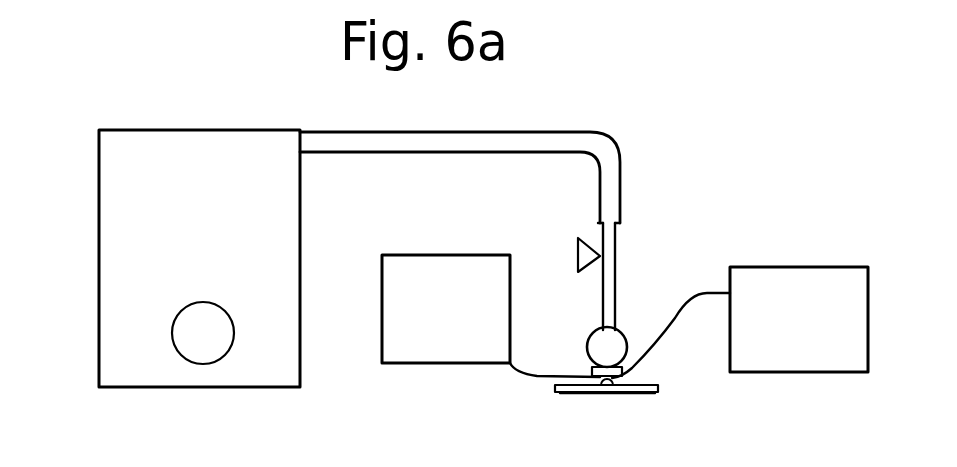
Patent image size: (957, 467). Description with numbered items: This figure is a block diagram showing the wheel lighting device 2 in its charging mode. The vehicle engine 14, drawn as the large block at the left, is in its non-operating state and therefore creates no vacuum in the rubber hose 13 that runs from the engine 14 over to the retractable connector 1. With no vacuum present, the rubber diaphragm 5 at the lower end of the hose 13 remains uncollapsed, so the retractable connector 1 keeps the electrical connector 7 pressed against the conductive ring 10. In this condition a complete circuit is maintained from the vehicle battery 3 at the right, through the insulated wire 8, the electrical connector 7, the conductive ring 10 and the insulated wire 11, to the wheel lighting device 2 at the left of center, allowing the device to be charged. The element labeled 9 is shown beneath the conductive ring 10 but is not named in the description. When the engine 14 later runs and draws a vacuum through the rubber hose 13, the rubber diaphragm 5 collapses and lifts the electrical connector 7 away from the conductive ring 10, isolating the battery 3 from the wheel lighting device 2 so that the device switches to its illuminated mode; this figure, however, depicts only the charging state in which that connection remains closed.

The retractable connector 1 is at (628, 263).
The wheel lighting device 2 is at (422, 338).
The vehicle battery 3 is at (783, 350).
The rubber diaphragm 5 is at (598, 345).
The electrical connector 7 is at (630, 371).
The insulated wire 8 is at (677, 318).
The substrate 9 is at (566, 392).
The conductive ring 10 is at (637, 394).
The insulated wire 11 is at (530, 368).
The rubber hose 13 is at (605, 166).
The vehicle engine 14 is at (120, 260).